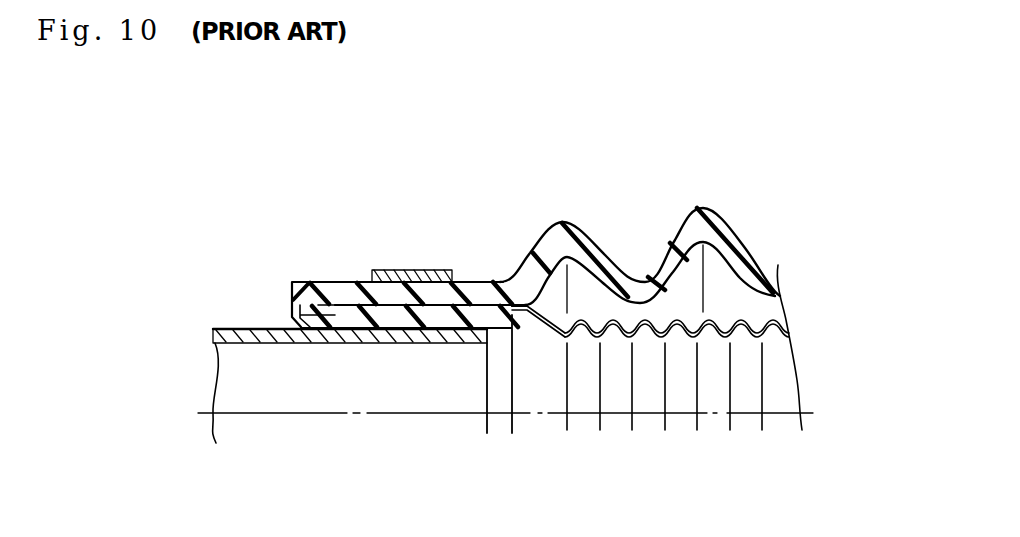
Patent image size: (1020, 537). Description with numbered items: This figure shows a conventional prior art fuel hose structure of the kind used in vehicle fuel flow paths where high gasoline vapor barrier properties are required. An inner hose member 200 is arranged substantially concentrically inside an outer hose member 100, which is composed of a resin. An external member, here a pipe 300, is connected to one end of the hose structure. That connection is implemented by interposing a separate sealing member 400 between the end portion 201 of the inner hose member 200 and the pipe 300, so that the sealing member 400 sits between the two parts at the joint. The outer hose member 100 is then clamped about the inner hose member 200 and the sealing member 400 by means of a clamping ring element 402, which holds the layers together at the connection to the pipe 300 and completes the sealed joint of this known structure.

The outer hose member 100 is at (570, 232).
The inner hose member 200 is at (680, 318).
The end portion 201 is at (398, 303).
The pipe 300 is at (230, 330).
The sealing member 400 is at (302, 287).
The clamping ring element 402 is at (440, 270).